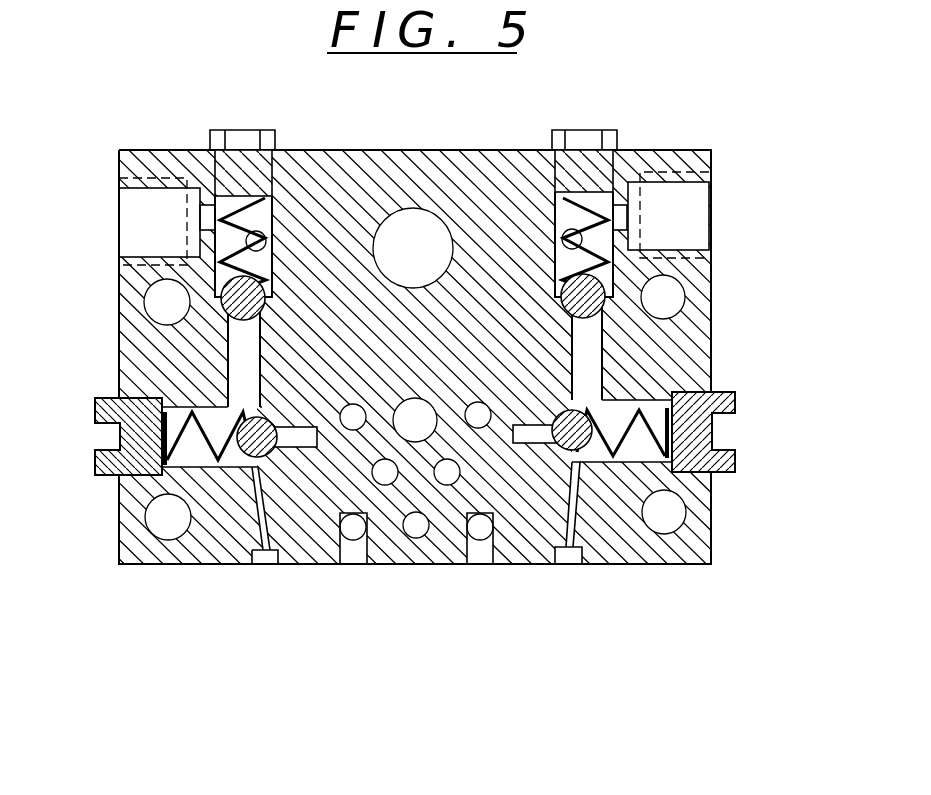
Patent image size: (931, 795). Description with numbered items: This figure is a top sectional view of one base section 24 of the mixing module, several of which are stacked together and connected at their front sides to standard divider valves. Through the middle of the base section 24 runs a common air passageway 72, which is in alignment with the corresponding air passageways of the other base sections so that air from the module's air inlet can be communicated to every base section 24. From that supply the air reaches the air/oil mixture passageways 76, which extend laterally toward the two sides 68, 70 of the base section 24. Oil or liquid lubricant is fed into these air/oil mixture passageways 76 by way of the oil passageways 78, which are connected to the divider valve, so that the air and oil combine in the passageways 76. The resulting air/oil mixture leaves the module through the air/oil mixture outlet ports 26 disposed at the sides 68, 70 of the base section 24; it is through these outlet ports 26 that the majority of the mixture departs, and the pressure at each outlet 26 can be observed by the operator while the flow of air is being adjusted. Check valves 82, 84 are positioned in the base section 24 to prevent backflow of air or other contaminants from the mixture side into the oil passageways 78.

The base section 24 is at (724, 320).
The air/oil mixture outlet port 26 is at (150, 188).
The side 68 is at (118, 300).
The side 70 is at (712, 302).
The common air passageway 72 is at (440, 220).
The air/oil mixture passageway 76 is at (121, 447).
The oil passageway 78 is at (253, 533).
The check valve 82 is at (263, 290).
The check valve 84 is at (265, 455).